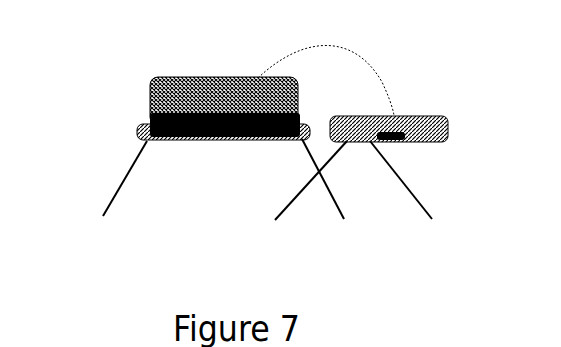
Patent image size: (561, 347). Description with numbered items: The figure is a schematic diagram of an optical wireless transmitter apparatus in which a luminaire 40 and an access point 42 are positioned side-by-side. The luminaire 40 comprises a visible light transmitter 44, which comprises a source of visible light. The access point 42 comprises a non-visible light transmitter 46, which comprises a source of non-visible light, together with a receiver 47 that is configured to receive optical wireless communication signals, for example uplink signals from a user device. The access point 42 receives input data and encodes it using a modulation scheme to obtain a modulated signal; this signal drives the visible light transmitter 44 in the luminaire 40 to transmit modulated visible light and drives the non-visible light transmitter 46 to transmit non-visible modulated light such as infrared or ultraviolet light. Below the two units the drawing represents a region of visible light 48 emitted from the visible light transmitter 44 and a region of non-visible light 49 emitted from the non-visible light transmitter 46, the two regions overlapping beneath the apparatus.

The luminaire 40 is at (188, 88).
The access point 42 is at (416, 117).
The visible light transmitter 44 is at (157, 120).
The non-visible light transmitter 46 is at (316, 162).
The receiver 47 is at (390, 143).
The region of visible light 48 is at (144, 208).
The region of non-visible light 49 is at (396, 207).